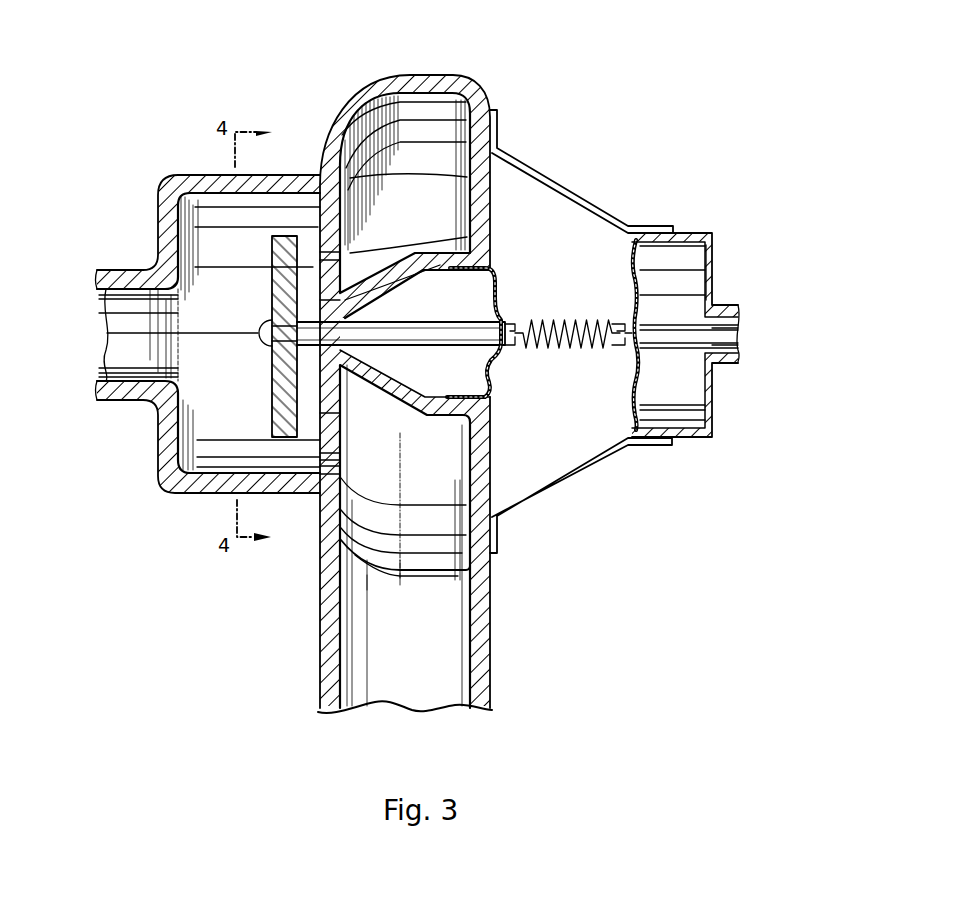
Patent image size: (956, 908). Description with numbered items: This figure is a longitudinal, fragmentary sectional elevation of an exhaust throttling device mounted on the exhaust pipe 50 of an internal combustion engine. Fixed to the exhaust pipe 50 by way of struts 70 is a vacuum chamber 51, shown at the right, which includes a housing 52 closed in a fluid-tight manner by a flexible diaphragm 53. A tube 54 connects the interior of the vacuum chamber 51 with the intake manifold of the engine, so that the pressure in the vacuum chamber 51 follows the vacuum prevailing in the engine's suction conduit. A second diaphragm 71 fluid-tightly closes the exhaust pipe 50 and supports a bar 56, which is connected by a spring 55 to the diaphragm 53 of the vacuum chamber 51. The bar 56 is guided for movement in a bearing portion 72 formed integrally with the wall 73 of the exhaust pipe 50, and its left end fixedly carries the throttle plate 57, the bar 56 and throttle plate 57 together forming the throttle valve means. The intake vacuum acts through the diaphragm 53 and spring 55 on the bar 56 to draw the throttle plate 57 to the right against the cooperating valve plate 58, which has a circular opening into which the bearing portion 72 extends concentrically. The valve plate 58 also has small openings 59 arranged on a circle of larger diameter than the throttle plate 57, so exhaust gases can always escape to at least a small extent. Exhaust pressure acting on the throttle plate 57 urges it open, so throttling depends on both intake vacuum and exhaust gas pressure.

The exhaust pipe 50 is at (147, 182).
The vacuum chamber 51 is at (727, 228).
The housing 52 is at (713, 270).
The diaphragm 53 is at (632, 373).
The tube 54 is at (731, 362).
The spring 55 is at (588, 320).
The bar 56 is at (450, 343).
The throttle plate 57 is at (275, 263).
The valve plate 58 is at (327, 423).
The small openings 59 is at (320, 458).
The struts 70 is at (567, 188).
The diaphragm 71 is at (490, 307).
The bearing portion 72 is at (327, 303).
The wall 73 is at (378, 90).